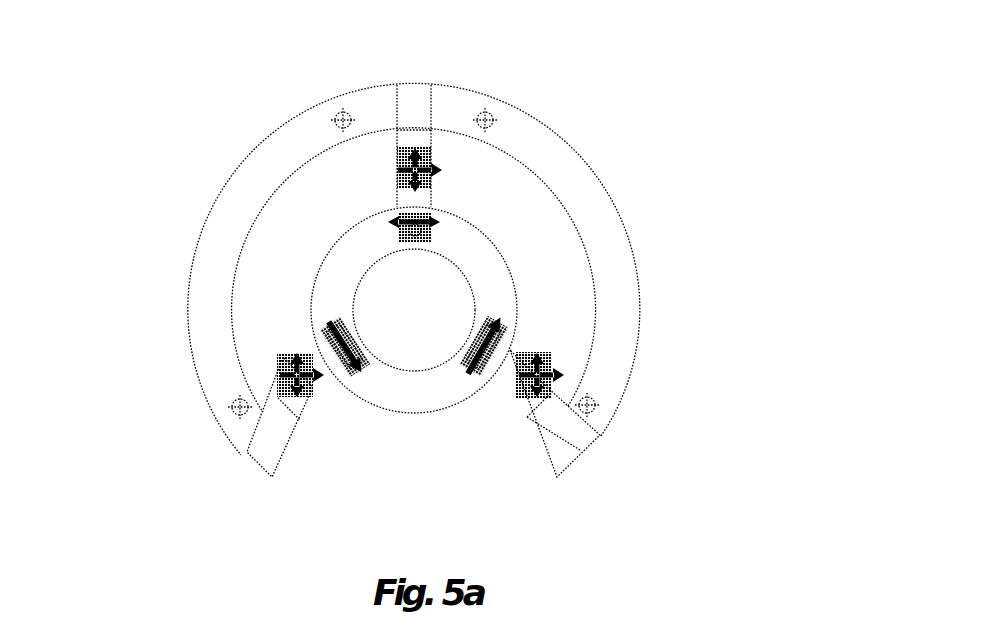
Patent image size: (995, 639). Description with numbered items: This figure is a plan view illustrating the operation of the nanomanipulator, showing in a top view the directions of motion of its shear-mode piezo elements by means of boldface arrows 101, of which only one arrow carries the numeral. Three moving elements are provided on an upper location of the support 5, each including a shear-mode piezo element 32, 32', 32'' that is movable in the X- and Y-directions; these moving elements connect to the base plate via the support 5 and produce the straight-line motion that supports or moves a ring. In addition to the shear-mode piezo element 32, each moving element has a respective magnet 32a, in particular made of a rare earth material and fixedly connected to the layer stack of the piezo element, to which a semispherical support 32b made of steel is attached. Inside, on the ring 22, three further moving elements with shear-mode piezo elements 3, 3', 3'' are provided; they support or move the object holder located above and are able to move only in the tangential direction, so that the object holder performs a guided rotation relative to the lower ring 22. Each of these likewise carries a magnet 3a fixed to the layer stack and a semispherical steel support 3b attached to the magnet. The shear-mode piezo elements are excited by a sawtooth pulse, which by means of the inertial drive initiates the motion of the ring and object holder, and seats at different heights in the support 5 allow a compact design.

The support 5 is at (553, 138).
The ring 22 is at (397, 410).
The shear-mode piezo element 32 is at (338, 111).
The magnet 32a is at (338, 111).
The semispherical support 32b is at (398, 158).
The shear-mode piezo element 32' is at (197, 441).
The shear-mode piezo element 32'' is at (671, 420).
The boldface arrow 101 is at (448, 168).
The shear-mode piezo element 3 is at (561, 190).
The magnet 3a is at (561, 190).
The semispherical support 3b is at (428, 230).
The shear-mode piezo element 3' is at (220, 288).
The shear-mode piezo element 3'' is at (590, 426).